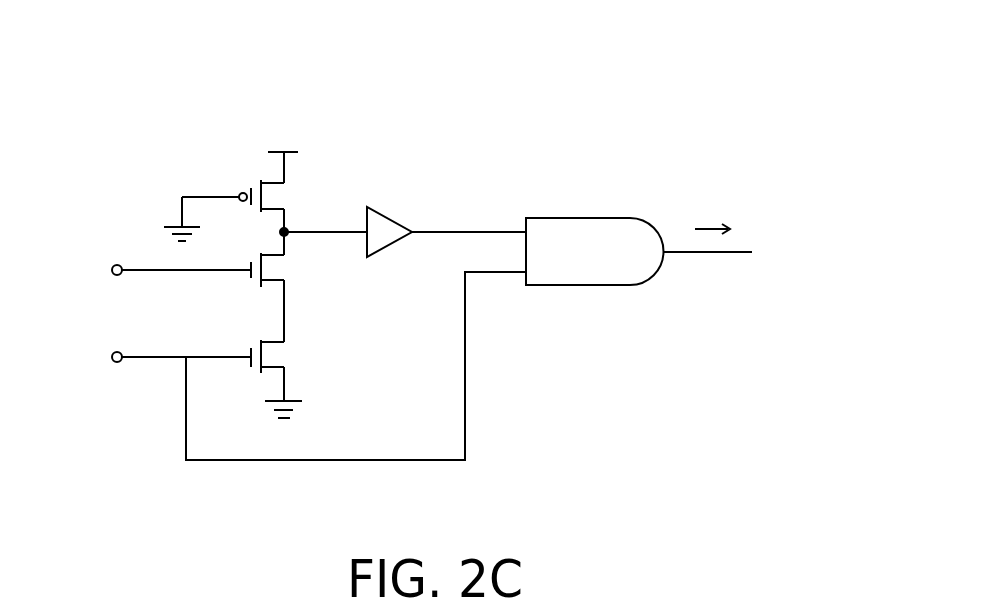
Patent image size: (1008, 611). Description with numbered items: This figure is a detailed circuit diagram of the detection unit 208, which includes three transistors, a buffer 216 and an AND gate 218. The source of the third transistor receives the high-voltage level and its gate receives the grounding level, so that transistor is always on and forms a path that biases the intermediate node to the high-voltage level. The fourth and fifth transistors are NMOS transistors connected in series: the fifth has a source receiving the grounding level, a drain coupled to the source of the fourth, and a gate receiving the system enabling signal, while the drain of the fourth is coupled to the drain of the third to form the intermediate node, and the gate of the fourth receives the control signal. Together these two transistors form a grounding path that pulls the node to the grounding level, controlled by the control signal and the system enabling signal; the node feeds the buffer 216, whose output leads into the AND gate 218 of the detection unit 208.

The detection unit 208 is at (75, 45).
The buffer 216 is at (393, 215).
The AND gate 218 is at (578, 218).